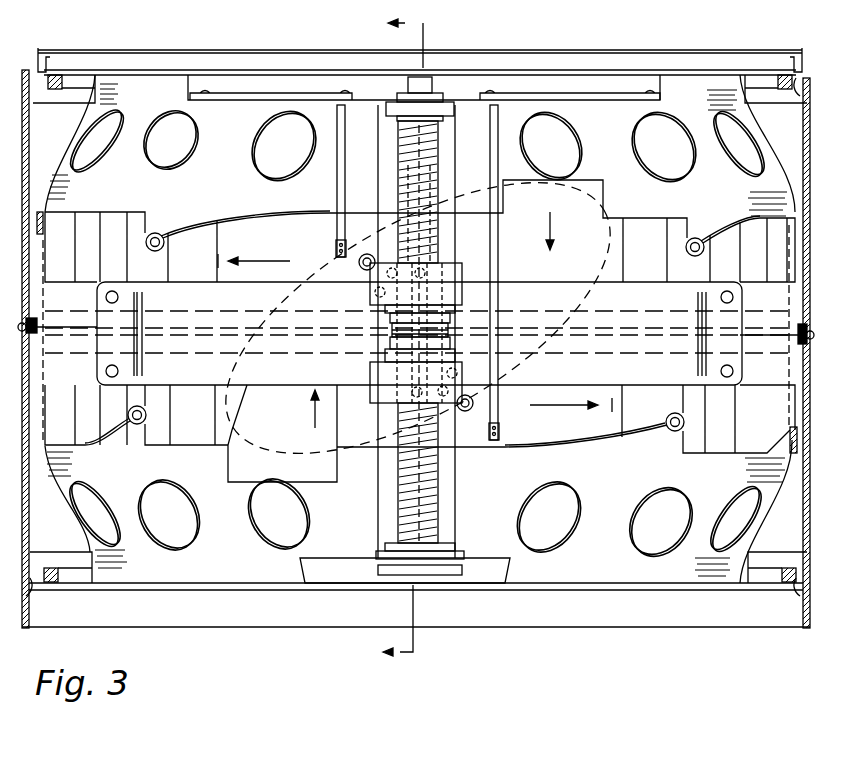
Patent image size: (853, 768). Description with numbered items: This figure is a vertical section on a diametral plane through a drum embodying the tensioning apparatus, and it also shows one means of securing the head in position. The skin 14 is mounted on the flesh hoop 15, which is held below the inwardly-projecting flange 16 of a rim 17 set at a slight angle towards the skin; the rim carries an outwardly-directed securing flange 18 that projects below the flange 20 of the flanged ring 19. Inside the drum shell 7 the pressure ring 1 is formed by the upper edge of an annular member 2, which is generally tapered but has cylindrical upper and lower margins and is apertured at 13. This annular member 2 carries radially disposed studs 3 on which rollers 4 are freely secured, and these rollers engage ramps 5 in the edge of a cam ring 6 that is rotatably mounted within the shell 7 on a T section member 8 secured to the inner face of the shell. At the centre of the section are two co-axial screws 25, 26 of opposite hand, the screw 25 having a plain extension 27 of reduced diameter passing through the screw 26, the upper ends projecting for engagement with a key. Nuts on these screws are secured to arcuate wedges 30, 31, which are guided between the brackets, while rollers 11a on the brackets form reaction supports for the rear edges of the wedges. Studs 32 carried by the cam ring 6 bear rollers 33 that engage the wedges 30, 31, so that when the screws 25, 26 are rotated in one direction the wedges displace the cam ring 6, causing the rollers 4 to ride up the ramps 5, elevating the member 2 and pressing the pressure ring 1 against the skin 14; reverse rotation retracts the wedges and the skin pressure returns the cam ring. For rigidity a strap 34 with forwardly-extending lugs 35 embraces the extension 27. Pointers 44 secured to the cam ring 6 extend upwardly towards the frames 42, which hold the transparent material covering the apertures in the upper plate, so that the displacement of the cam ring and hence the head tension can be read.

The pressure ring 1 is at (138, 78).
The annular member 2 is at (76, 138).
The stud 3 is at (164, 239).
The roller 4 is at (156, 232).
The ramp 5 is at (200, 227).
The cam ring 6 is at (417, 331).
The drum shell 7 is at (810, 137).
The T section member 8 is at (808, 331).
The roller 11a is at (423, 270).
The aperture 13 is at (416, 333).
The skin 14 is at (87, 73).
The flesh hoop 15 is at (52, 88).
The inwardly-projecting flange 16 is at (60, 73).
The rim 17 is at (37, 52).
The securing flange 18 is at (804, 109).
The flanged ring 19 is at (803, 96).
The flange 20 is at (799, 82).
The screw 25 is at (437, 493).
The screw 26 is at (437, 152).
The plain extension 27 is at (400, 180).
The wedge 30 is at (291, 409).
The wedge 31 is at (535, 238).
The stud 32 is at (365, 254).
The roller 33 is at (359, 264).
The strap 34 is at (420, 333).
The lug 35 is at (388, 311).
The frame 42 is at (425, 88).
The pointer 44 is at (456, 397).